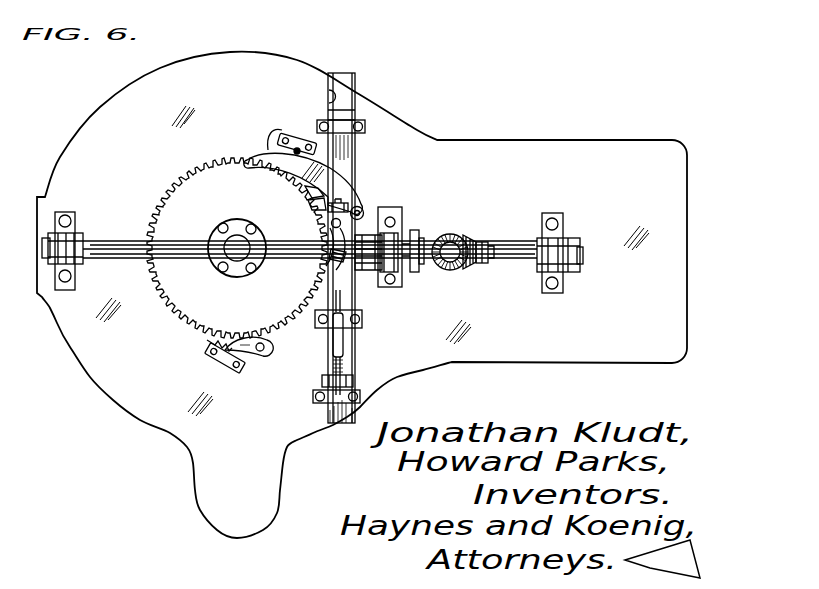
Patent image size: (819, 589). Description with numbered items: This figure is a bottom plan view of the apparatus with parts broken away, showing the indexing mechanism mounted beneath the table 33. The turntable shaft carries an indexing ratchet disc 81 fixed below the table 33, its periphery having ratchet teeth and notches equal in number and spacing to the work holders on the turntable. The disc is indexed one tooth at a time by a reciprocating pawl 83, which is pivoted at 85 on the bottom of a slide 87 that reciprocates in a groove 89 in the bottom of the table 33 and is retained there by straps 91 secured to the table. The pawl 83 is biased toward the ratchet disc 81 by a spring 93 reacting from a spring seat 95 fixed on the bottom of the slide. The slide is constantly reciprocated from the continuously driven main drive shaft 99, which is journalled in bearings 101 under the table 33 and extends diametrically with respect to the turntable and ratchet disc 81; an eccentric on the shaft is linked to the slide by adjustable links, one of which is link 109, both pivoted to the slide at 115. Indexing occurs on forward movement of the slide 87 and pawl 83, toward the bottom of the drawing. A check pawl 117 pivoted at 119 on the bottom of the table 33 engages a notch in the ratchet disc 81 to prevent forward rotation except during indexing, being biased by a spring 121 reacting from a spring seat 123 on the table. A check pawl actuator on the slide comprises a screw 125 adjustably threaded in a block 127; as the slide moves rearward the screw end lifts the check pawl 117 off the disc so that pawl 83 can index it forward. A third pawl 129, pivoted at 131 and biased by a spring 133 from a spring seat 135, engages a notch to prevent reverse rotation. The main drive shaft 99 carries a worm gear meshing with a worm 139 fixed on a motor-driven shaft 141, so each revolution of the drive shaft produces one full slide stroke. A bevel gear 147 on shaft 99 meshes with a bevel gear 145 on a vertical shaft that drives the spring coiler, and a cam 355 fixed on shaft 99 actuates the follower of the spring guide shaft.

The table 33 is at (103, 122).
The indexing ratchet disc 81 is at (167, 304).
The reciprocating pawl 83 is at (330, 226).
The pivot 85 is at (326, 211).
The slide 87 is at (352, 160).
The groove 89 is at (329, 97).
The straps 91 is at (348, 125).
The spring 93 is at (330, 255).
The spring seat 95 is at (326, 272).
The main drive shaft 99 is at (120, 243).
The bearings 101 is at (50, 236).
The adjustable link 109 is at (345, 362).
The pivot 115 is at (323, 382).
The check pawl 117 is at (258, 158).
The pivot 119 is at (361, 207).
The spring 121 is at (270, 152).
The spring seat 123 is at (299, 138).
The screw 125 is at (305, 188).
The block 127 is at (310, 205).
The third pawl 129 is at (254, 358).
The pivot 131 is at (268, 348).
The spring 133 is at (226, 351).
The spring seat 135 is at (217, 368).
The worm 139 is at (386, 284).
The shaft 141 is at (396, 222).
The bevel gear 145 is at (461, 241).
The bevel gear 147 is at (471, 267).
The cam 355 is at (420, 236).